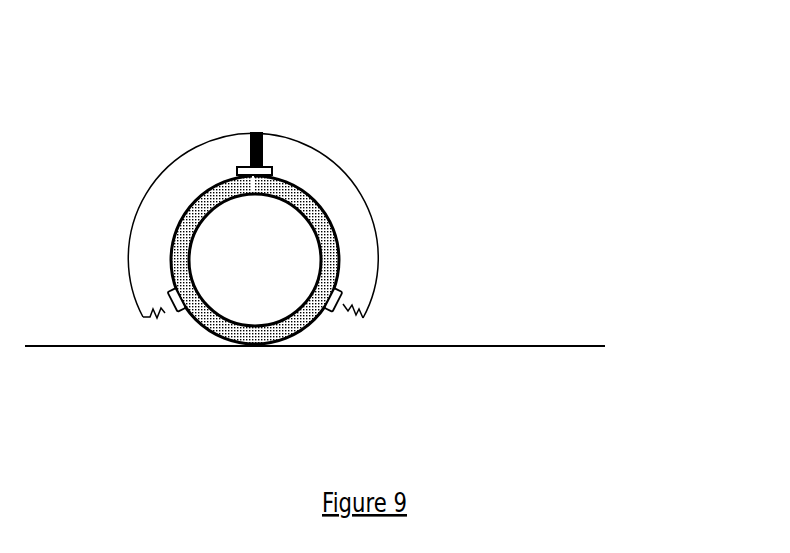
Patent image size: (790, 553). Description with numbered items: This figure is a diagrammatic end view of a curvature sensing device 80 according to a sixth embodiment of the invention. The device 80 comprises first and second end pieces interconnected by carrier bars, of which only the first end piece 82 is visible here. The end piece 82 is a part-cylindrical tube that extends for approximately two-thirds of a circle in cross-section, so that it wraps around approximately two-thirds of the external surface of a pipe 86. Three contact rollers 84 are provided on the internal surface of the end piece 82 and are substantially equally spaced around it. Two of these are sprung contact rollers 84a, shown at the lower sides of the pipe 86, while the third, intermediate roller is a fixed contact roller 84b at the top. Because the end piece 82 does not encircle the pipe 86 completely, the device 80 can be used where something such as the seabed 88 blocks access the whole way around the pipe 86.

The curvature sensing device 80 is at (345, 108).
The end piece 82 is at (370, 203).
The contact roller 84 is at (333, 303).
The sprung contact roller 84a is at (185, 306).
The fixed contact roller 84b is at (247, 167).
The pipe 86 is at (177, 225).
The seabed 88 is at (505, 347).